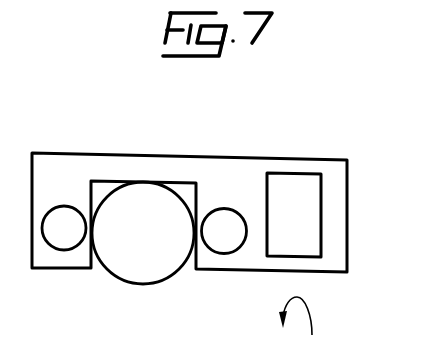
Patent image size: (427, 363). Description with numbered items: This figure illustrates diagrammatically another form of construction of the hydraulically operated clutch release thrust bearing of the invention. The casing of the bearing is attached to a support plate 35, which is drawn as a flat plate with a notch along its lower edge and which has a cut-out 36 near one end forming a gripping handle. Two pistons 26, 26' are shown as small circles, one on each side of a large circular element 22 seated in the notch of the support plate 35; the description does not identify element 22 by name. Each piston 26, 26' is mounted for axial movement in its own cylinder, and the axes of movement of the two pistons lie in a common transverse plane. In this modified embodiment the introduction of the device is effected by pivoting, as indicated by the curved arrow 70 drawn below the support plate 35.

The support plate 35 is at (301, 157).
The cut-out 36 is at (321, 212).
The drum 22 is at (157, 290).
The piston 26 is at (64, 264).
The piston 26' is at (224, 266).
The arrow 70 is at (309, 316).